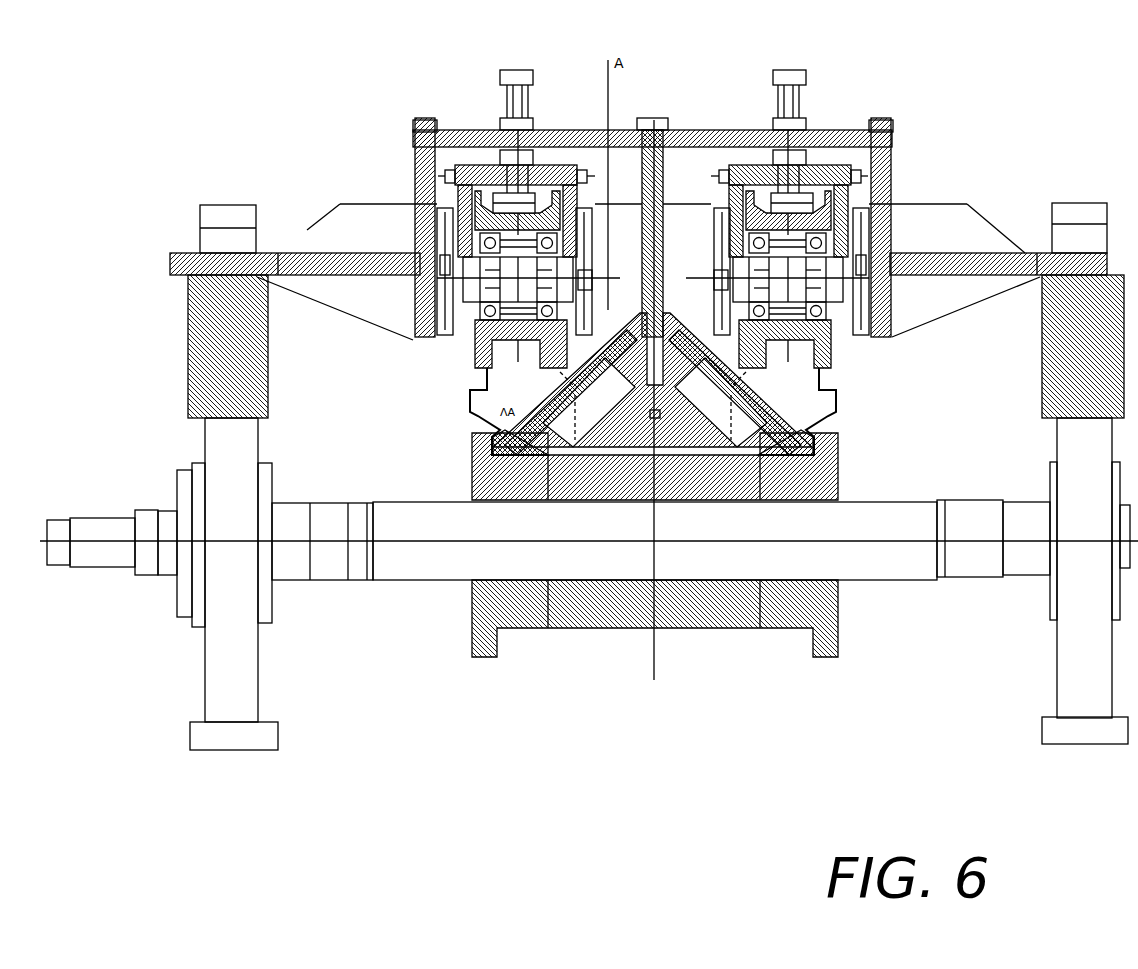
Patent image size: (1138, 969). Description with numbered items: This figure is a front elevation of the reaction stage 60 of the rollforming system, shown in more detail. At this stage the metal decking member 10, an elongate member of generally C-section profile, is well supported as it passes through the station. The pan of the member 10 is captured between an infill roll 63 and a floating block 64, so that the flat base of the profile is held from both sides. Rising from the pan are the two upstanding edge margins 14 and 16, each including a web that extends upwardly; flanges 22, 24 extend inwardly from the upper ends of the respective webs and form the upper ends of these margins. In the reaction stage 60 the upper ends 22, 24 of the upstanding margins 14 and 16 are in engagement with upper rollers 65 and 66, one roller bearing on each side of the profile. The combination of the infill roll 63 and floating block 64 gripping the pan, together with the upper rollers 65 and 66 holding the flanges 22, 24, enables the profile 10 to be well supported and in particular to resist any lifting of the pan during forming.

The metal decking member 10 is at (463, 413).
The upstanding edge margin 14 is at (473, 371).
The upstanding edge margin 16 is at (827, 397).
The flange 22 is at (460, 330).
The flange 24 is at (868, 330).
The reaction stage 60 is at (945, 130).
The infill roll 63 is at (690, 595).
The floating block 64 is at (467, 408).
The upper roller 65 is at (470, 213).
The upper roller 66 is at (848, 203).